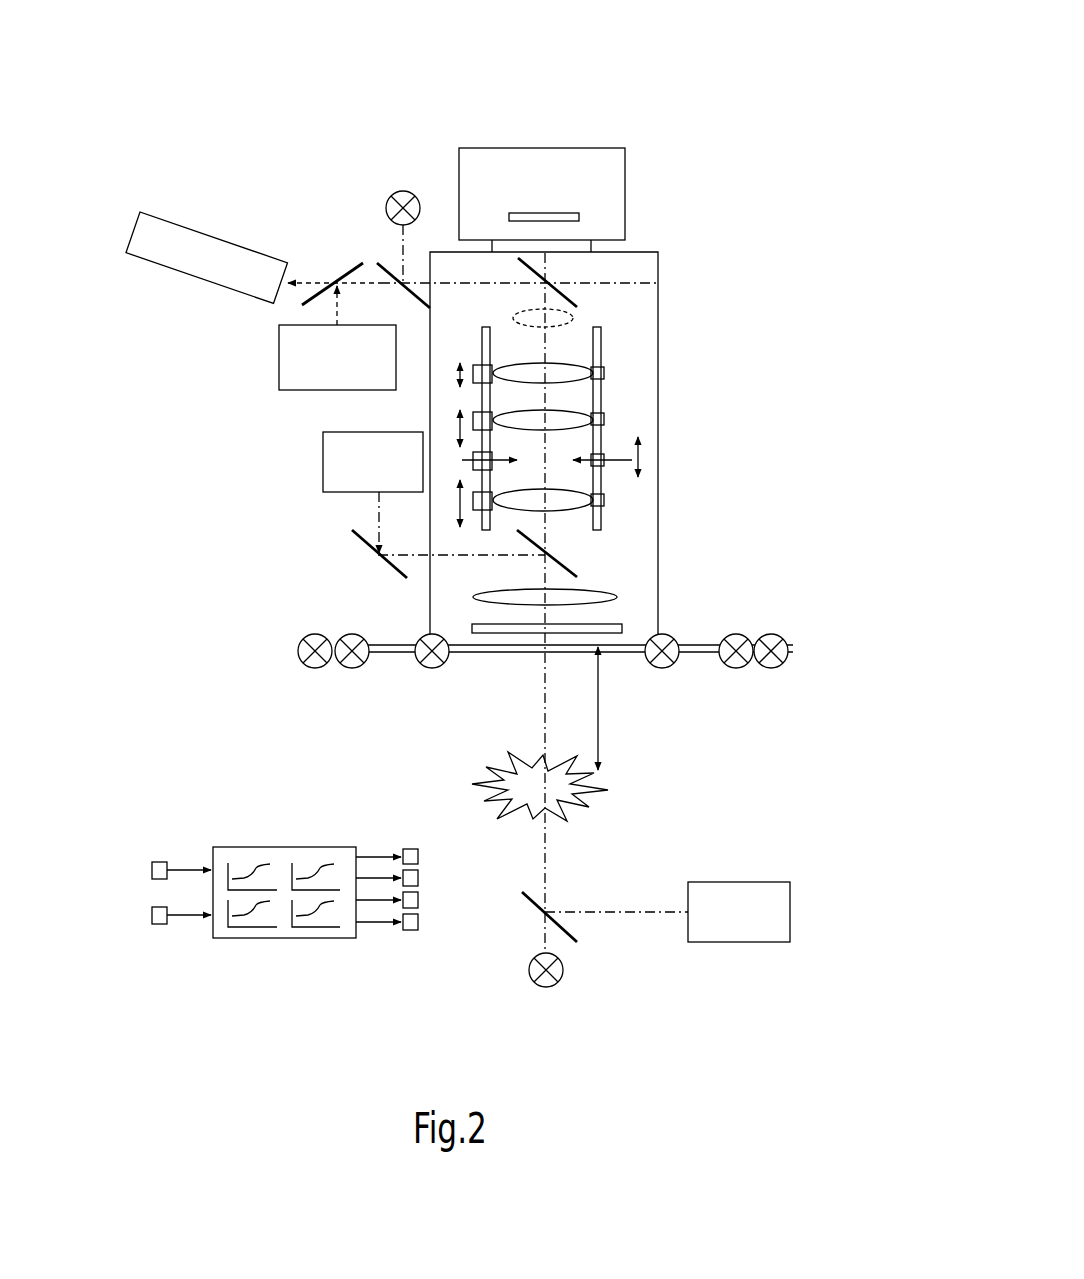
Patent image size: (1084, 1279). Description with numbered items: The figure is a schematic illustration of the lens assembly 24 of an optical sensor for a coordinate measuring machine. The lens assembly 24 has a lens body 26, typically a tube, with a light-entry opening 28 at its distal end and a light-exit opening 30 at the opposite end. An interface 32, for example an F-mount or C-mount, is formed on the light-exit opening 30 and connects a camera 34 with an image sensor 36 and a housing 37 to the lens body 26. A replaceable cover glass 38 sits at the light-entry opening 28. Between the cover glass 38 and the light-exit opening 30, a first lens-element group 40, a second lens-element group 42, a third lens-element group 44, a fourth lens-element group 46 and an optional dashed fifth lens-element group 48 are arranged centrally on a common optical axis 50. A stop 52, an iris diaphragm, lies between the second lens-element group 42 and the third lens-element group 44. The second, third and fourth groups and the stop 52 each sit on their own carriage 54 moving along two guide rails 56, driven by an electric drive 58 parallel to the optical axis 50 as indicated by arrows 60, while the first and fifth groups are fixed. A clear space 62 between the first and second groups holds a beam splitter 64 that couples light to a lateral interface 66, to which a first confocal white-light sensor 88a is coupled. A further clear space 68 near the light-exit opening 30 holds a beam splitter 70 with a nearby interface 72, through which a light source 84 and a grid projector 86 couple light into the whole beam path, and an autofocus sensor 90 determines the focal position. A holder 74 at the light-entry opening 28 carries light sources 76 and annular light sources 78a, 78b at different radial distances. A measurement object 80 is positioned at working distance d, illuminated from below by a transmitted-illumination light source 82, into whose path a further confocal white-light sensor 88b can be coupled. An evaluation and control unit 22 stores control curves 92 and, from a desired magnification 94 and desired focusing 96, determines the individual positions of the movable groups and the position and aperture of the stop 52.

The evaluation and control unit 22 is at (273, 940).
The lens assembly 24 is at (428, 598).
The lens body 26 is at (660, 313).
The light-entry opening 28 is at (500, 659).
The light-exit opening 30 is at (502, 225).
The interface 32 is at (577, 243).
The camera 34 is at (578, 146).
The image sensor 36 is at (571, 212).
The housing 37 is at (538, 148).
The cover glass 38 is at (622, 628).
The first lens-element group 40 is at (600, 592).
The second lens-element group 42 is at (566, 508).
The third lens-element group 44 is at (572, 409).
The fourth lens-element group 46 is at (560, 365).
The fifth lens-element group 48 is at (575, 312).
The optical axis 50 is at (548, 868).
The stop 52 is at (575, 457).
The carriage 54 is at (604, 371).
The guide rails 56 is at (605, 506).
The electric drive 58 is at (482, 365).
The arrows 60 is at (643, 457).
The clear space 62 is at (519, 583).
The beam splitter 64 is at (573, 562).
The interface 66 is at (448, 544).
The clear space 68 is at (492, 279).
The beam splitter 70 is at (553, 287).
The interface 72 is at (430, 253).
The holder 74 is at (390, 657).
The light source 76 is at (663, 670).
The light source 78a is at (742, 670).
The light source 78b is at (790, 646).
The measurement object 80 is at (482, 793).
The light source 82 is at (558, 985).
The light source 84 is at (388, 202).
The grid projector 86 is at (279, 362).
The first confocal white-light sensor 88a is at (323, 468).
The further confocal white-light sensor 88b is at (750, 882).
The autofocus sensor 90 is at (177, 271).
The control curves 92 is at (258, 866).
The desired magnification 94 is at (162, 862).
The desired focusing 96 is at (157, 924).
The distance d is at (607, 708).